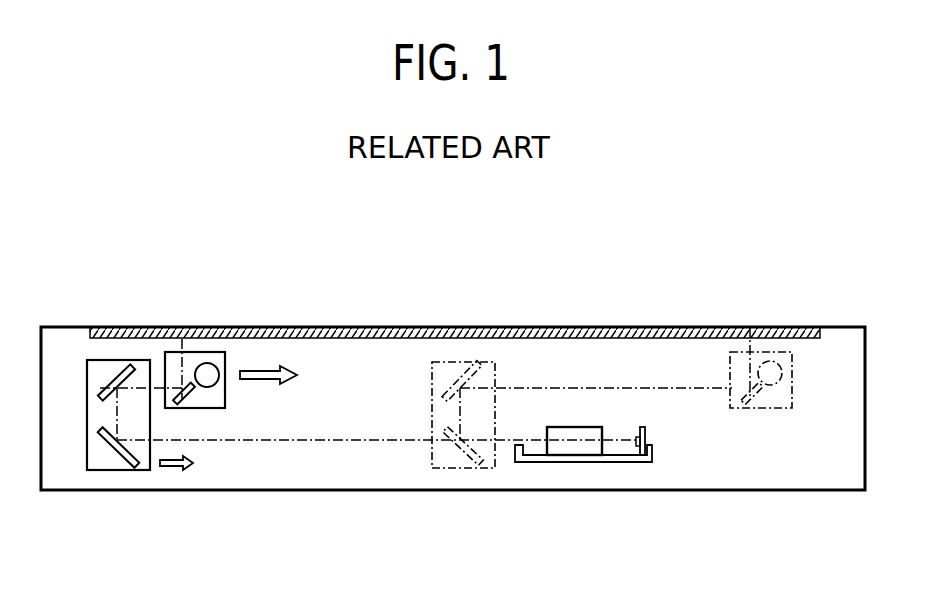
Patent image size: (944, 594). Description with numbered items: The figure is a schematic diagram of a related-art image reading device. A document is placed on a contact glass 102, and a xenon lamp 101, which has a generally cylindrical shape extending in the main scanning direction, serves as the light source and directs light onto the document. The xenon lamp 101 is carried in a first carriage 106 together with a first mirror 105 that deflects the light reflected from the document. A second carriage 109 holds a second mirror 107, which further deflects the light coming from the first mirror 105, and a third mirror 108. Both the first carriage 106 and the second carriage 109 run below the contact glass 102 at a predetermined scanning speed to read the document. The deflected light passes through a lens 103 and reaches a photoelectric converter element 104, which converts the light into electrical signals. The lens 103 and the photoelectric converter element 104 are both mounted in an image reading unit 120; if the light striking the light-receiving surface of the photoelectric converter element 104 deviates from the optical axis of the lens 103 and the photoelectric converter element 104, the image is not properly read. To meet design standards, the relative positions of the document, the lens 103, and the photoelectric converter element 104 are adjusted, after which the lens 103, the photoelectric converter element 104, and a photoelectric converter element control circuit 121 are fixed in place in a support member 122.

The xenon lamp 101 is at (212, 362).
The contact glass 102 is at (461, 327).
The lens 103 is at (562, 450).
The photoelectric converter element 104 is at (638, 437).
The first mirror 105 is at (192, 403).
The first carriage 106 is at (177, 352).
The second mirror 107 is at (118, 380).
The third mirror 108 is at (102, 437).
The second carriage 109 is at (137, 470).
The image reading unit 120 is at (588, 473).
The photoelectric converter element control circuit 121 is at (647, 433).
The support member 122 is at (630, 461).